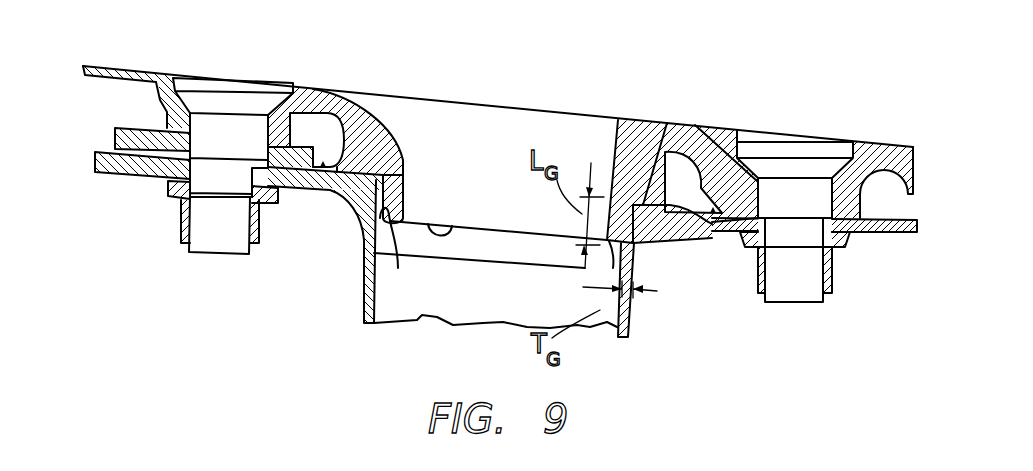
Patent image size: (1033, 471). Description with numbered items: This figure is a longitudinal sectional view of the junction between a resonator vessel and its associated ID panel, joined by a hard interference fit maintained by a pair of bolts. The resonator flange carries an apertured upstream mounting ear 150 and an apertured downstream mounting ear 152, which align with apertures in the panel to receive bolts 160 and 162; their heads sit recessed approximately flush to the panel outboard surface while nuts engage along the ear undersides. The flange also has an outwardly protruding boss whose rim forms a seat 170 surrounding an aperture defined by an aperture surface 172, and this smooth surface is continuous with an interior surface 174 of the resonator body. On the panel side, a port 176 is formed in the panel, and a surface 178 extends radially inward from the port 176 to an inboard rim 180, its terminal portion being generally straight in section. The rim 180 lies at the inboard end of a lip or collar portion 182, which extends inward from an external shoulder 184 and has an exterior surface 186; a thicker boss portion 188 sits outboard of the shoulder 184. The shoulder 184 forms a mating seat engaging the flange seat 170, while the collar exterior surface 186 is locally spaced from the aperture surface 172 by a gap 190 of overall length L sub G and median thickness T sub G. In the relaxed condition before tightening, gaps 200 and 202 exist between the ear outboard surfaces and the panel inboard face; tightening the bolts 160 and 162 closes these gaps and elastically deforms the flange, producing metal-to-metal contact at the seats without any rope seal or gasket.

The upstream mounting ear 150 is at (113, 172).
The downstream mounting ear 152 is at (707, 236).
The bolt 160 is at (223, 131).
The bolt 162 is at (785, 175).
The seat 170 is at (665, 121).
The aperture surface 172 is at (634, 291).
The interior surface 174 is at (615, 338).
The port 176 is at (518, 127).
The surface 178 is at (582, 134).
The inboard rim 180 is at (456, 222).
The collar portion 182 is at (422, 195).
The external shoulder 184 is at (403, 170).
The exterior surface 186 is at (391, 238).
The boss portion 188 is at (372, 135).
The gap 190 is at (583, 271).
The gap 200 is at (333, 120).
The gap 202 is at (722, 138).